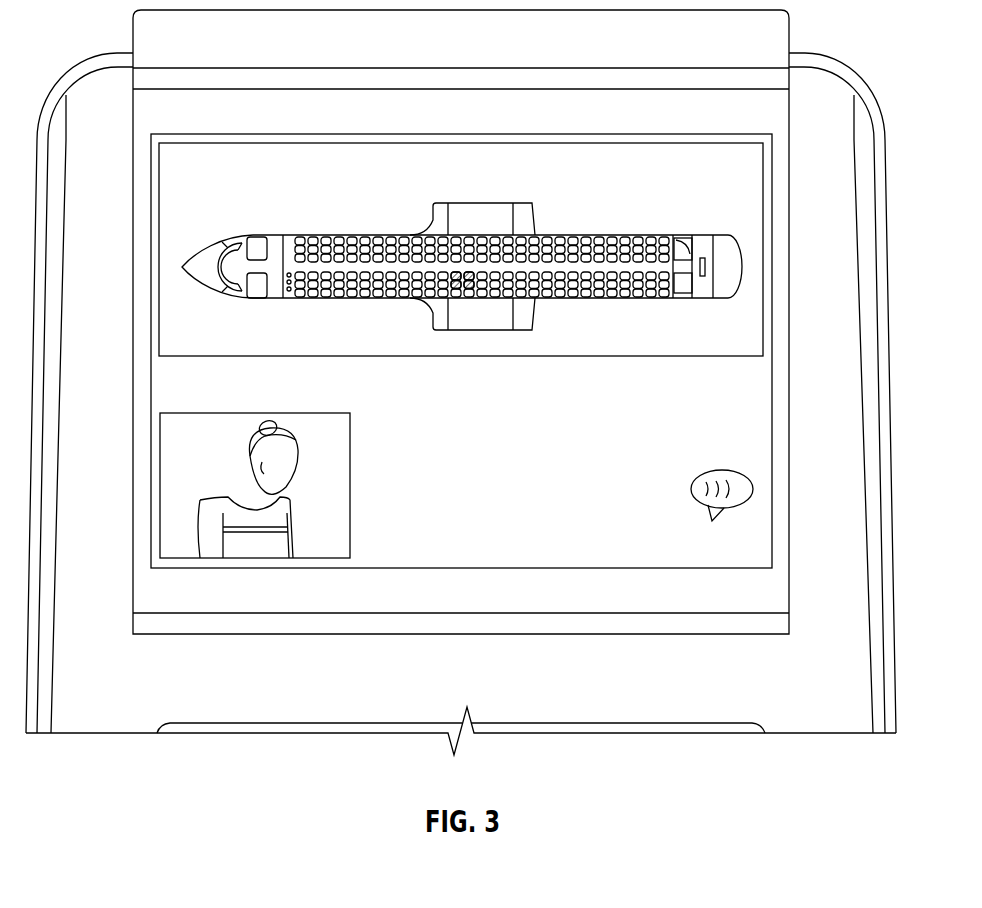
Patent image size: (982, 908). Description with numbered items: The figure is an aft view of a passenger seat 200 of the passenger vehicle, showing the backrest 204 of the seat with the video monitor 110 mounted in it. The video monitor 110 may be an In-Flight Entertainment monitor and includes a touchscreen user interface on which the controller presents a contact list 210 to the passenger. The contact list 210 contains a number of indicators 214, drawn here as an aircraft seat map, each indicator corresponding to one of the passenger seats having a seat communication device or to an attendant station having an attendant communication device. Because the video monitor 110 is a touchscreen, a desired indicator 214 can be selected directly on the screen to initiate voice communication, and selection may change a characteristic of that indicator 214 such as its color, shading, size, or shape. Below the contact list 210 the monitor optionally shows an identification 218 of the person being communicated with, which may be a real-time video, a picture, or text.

The video monitor 110 is at (723, 112).
The passenger seat 200 is at (823, 83).
The backrest 204 is at (845, 141).
The contact list 210 is at (177, 160).
The indicators 214 is at (362, 284).
The identification 218 is at (330, 457).